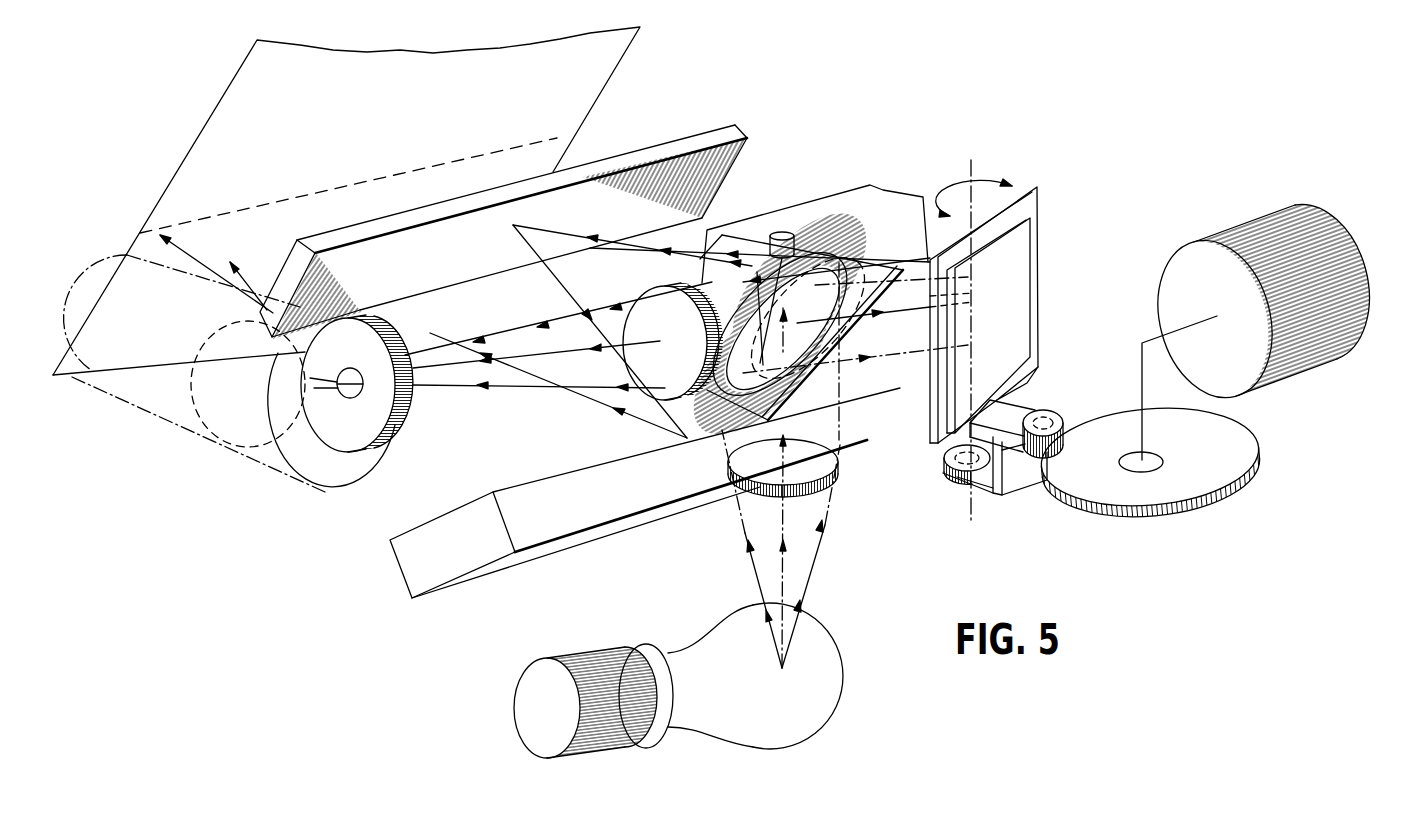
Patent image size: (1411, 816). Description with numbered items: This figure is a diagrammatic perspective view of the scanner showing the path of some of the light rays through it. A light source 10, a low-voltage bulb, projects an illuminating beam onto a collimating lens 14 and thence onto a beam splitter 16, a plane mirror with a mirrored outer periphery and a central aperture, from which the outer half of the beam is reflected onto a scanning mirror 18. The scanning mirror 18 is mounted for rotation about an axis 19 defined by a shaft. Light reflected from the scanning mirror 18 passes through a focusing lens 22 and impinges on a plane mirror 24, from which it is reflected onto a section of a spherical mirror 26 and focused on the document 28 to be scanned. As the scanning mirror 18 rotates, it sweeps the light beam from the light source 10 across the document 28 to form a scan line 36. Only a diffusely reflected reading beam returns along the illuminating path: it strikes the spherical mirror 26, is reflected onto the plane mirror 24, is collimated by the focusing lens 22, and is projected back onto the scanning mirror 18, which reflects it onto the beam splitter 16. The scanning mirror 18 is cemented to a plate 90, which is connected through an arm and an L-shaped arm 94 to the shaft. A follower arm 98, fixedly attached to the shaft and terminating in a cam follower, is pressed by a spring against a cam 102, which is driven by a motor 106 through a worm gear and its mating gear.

The light source 10 is at (778, 709).
The collimating lens 14 is at (792, 482).
The beam splitter 16 is at (812, 248).
The scanning mirror 18 is at (1034, 212).
The axis 19 is at (971, 510).
The focusing lens 22 is at (919, 249).
The plane mirror 24 is at (452, 265).
The spherical mirror 26 is at (571, 472).
The document 28 is at (402, 129).
The scan line 36 is at (509, 149).
The plate 90 is at (1014, 301).
The L-shaped arm 94 is at (958, 478).
The follower arm 98 is at (960, 444).
The cam 102 is at (1109, 484).
The motor 106 is at (1226, 233).